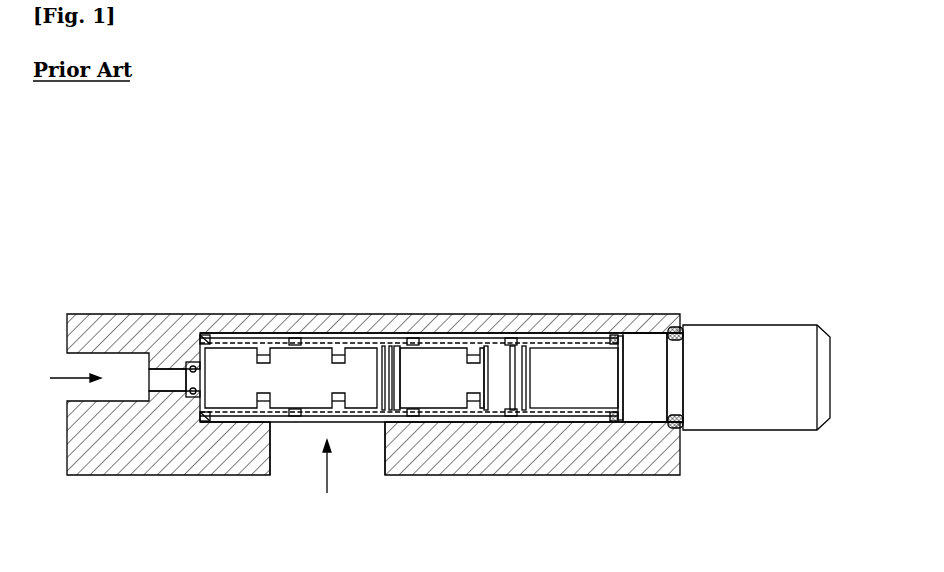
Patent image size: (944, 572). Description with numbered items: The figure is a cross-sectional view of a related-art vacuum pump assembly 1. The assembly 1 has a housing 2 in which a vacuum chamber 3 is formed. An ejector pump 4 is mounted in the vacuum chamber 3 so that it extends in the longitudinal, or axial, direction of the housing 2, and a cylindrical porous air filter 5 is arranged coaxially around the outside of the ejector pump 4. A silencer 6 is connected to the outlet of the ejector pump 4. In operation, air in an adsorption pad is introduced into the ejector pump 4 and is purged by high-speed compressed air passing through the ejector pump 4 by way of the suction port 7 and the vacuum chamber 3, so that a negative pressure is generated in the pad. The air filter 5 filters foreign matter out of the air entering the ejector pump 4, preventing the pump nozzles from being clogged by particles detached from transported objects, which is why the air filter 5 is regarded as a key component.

The assembly 1 is at (581, 219).
The housing 2 is at (342, 312).
The vacuum chamber 3 is at (450, 340).
The ejector pump 4 is at (228, 340).
The cylindrical porous air filter 5 is at (443, 412).
The silencer 6 is at (748, 328).
The suction port 7 is at (293, 460).